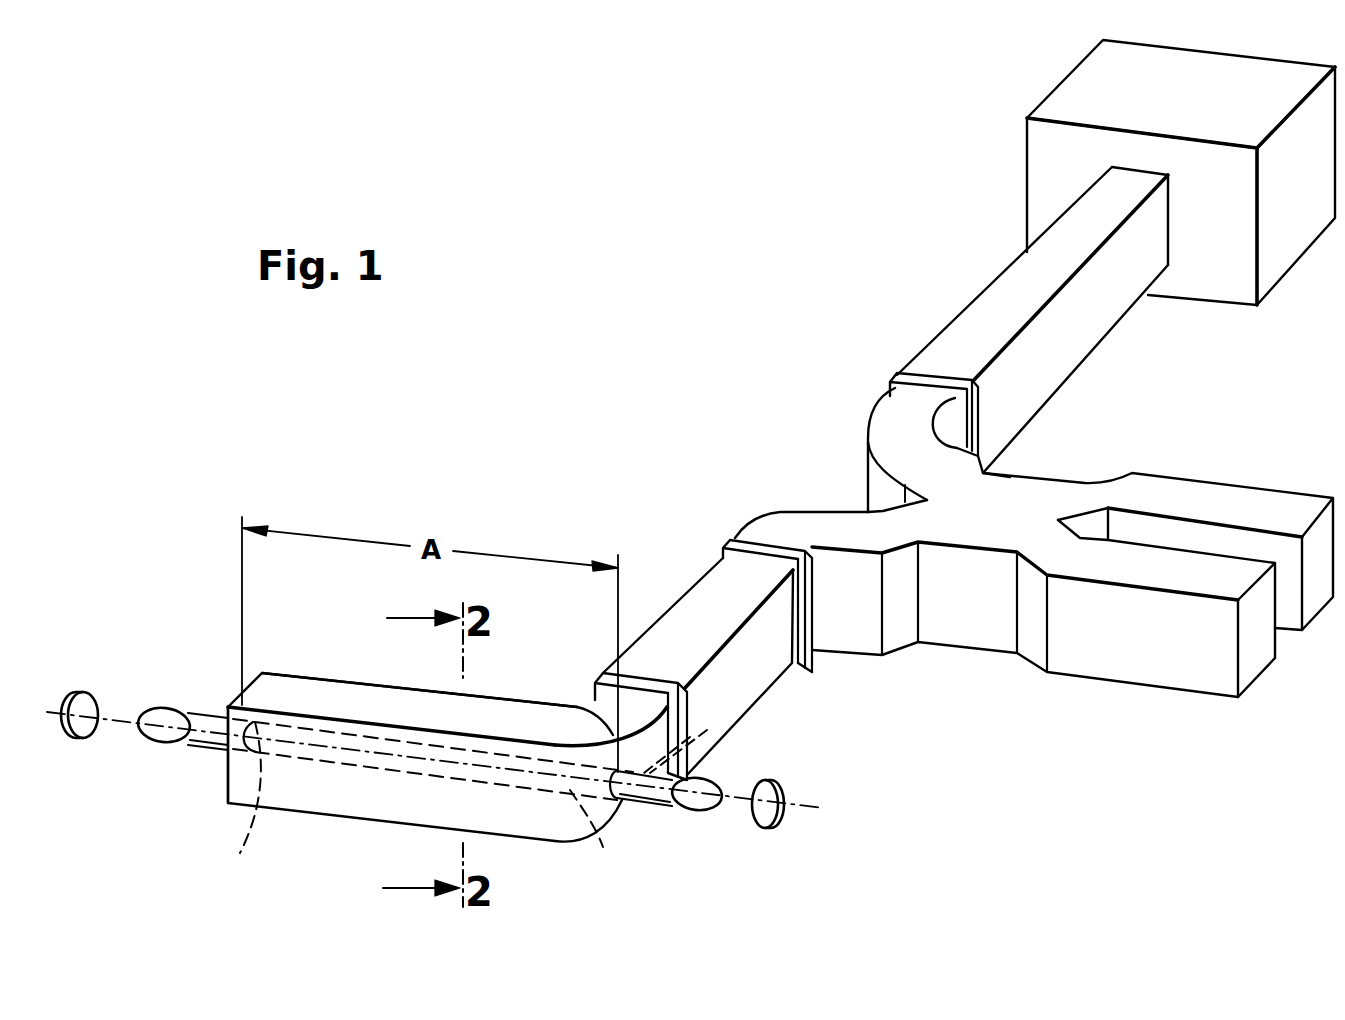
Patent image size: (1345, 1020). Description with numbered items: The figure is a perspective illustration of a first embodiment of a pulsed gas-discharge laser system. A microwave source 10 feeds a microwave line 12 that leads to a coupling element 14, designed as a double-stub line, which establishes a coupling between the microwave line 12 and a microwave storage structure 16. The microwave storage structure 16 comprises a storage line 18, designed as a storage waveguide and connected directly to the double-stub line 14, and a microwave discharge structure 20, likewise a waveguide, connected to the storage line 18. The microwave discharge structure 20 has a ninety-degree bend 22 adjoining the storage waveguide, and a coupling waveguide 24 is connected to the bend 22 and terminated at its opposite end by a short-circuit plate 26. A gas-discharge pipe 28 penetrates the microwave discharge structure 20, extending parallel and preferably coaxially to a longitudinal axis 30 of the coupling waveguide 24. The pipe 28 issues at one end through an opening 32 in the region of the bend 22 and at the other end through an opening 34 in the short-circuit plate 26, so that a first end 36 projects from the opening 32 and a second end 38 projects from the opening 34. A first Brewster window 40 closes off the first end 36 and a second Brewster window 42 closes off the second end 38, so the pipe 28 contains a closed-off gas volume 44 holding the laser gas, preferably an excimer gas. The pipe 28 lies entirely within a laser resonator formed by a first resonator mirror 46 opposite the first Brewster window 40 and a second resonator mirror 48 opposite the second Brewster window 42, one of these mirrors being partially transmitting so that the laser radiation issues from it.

The microwave source 10 is at (1044, 158).
The microwave line 12 is at (947, 357).
The coupling element 14 is at (1028, 512).
The microwave storage structure 16 is at (577, 682).
The storage line 18 is at (685, 633).
The microwave discharge structure 20 is at (367, 810).
The 90° bend 22 is at (610, 730).
The coupling waveguide 24 is at (303, 697).
The short-circuit plate 26 is at (226, 787).
The gas-discharge pipe 28 is at (433, 805).
The longitudinal axis 30 is at (358, 750).
The opening 32 is at (653, 803).
The opening 34 is at (241, 804).
The first end 36 is at (657, 808).
The second end 38 is at (193, 748).
The first Brewster window 40 is at (718, 787).
The second Brewster window 42 is at (167, 718).
The gas volume 44 is at (688, 734).
The first resonator mirror 46 is at (763, 822).
The second resonator mirror 48 is at (85, 732).